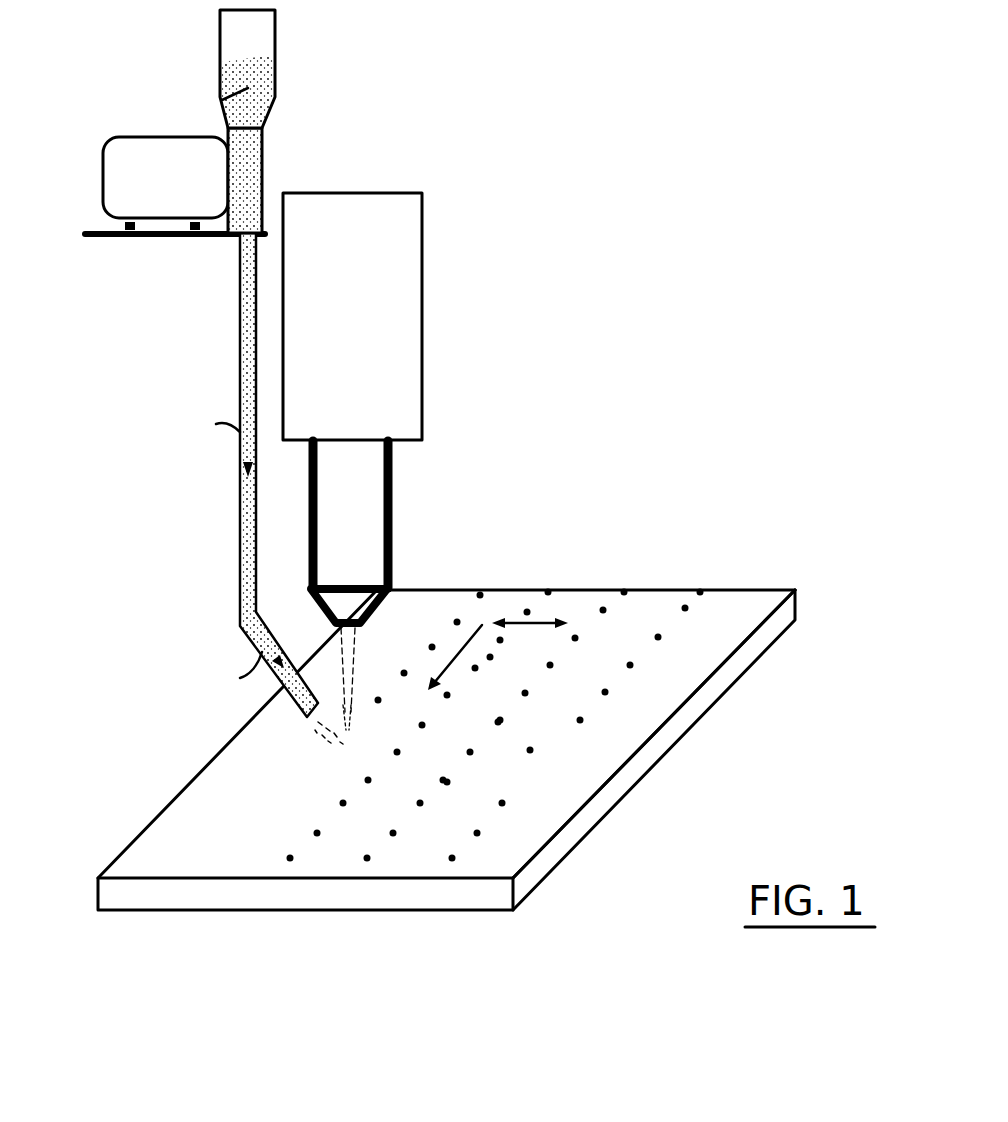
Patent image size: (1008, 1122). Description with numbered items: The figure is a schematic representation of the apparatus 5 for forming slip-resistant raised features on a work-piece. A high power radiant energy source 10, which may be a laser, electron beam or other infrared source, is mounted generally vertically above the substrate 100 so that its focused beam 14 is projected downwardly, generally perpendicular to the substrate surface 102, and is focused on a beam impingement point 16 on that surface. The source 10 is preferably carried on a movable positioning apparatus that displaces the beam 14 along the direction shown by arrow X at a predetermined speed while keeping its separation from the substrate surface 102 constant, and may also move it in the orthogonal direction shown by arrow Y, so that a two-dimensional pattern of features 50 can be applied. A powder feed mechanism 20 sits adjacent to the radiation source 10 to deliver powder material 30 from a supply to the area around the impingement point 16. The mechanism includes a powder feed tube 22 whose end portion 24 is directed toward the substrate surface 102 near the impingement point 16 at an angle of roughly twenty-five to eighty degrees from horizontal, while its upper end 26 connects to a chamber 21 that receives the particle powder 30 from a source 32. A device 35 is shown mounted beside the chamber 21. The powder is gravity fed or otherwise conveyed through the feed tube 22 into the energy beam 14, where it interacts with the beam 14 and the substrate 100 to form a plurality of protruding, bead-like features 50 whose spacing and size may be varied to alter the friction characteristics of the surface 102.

The apparatus 5 is at (509, 146).
The high power radiant energy source 10 is at (393, 262).
The focused beam 14 is at (358, 648).
The beam impingement point 16 is at (348, 743).
The powder feed mechanism 20 is at (291, 124).
The chamber 21 is at (262, 172).
The powder feed tube 22 is at (240, 574).
The end portion 24 is at (310, 718).
The upper end 26 is at (240, 240).
The powder material 30 is at (222, 100).
The source 32 is at (272, 62).
The vibrator 35 is at (135, 150).
The slip-resistant raised features 50 is at (317, 833).
The substrate 100 is at (798, 617).
The substrate surface 102 is at (608, 710).